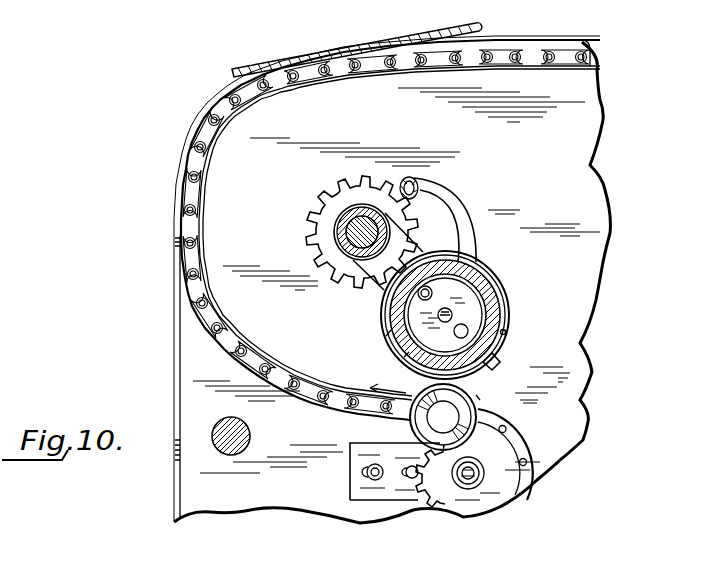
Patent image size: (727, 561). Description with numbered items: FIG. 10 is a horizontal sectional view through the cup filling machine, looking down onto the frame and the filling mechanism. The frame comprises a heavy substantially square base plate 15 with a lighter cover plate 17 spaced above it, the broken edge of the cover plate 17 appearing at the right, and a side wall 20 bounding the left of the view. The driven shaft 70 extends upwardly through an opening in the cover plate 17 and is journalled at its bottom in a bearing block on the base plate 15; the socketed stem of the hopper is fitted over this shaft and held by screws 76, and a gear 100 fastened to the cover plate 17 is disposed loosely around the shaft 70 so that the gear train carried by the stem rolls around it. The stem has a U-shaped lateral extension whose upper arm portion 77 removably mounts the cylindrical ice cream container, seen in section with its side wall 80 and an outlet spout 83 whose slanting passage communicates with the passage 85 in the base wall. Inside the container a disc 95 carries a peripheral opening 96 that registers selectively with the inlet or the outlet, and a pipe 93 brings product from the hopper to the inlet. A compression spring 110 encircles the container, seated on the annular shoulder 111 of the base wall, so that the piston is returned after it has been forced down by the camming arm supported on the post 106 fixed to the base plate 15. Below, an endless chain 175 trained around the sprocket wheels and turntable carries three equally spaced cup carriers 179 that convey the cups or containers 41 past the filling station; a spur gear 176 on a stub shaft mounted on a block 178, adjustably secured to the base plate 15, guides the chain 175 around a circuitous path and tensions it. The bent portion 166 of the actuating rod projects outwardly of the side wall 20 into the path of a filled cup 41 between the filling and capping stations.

The bent portion 166 is at (246, 71).
The cover plate 17 is at (587, 134).
The side wall 20 is at (176, 349).
The base plate 15 is at (250, 502).
The screws 76 is at (351, 197).
The gear 100 is at (322, 202).
The driven shaft 70 is at (350, 235).
The upper arm portion 77 is at (374, 292).
The pipe 93 is at (463, 202).
The opening 96 is at (432, 290).
The disc 95 is at (468, 309).
The side wall 80 is at (484, 318).
The passage 85 is at (506, 332).
The outlet spout 83 is at (498, 362).
The annular shoulder 111 is at (386, 336).
The compression spring 110 is at (404, 357).
The cup carriers 179 is at (485, 389).
The cups or containers 41 is at (411, 426).
The post 106 is at (250, 433).
The endless chain 175 is at (518, 447).
The block 178 is at (355, 480).
The spur gear 176 is at (454, 503).